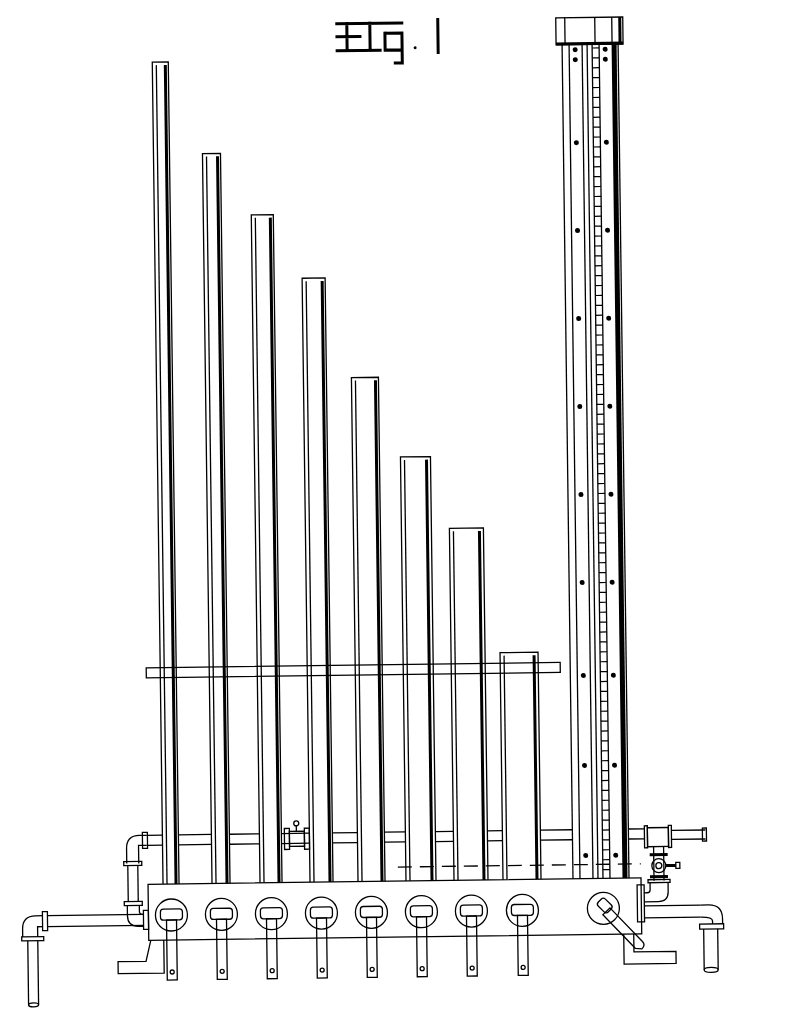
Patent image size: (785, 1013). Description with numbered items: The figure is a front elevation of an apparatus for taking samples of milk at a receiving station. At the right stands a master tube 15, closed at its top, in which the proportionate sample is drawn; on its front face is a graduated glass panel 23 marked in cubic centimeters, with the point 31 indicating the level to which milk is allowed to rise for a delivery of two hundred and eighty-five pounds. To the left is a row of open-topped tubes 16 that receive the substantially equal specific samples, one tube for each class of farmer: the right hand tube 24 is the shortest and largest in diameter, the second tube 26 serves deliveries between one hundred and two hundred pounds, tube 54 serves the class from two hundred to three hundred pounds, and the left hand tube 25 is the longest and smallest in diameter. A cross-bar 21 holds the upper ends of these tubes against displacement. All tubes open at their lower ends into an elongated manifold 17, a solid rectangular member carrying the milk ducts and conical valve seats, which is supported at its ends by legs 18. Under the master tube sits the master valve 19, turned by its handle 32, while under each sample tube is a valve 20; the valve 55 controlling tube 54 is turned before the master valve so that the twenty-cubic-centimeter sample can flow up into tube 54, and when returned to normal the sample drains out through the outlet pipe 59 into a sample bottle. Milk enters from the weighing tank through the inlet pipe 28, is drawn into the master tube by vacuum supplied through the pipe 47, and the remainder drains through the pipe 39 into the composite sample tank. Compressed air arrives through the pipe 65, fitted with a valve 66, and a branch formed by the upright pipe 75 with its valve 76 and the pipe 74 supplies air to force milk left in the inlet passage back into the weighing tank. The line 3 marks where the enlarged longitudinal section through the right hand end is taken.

The section line 3 is at (401, 874).
The master tube 15 is at (593, 448).
The sample tubes 16 is at (221, 150).
The manifold 17 is at (558, 919).
The legs 18 is at (139, 965).
The master valve 19 is at (602, 926).
The sample tube valves 20 is at (268, 912).
The cross-bar 21 is at (193, 665).
The graduated glass panel 23 is at (605, 294).
The right hand tube 24 is at (524, 751).
The left hand tube 25 is at (162, 297).
The second tube 26 is at (488, 578).
The inlet pipe 28 is at (711, 964).
The graduation point 31 is at (622, 576).
The handle 32 is at (631, 946).
The composite sample pipe 39 is at (72, 918).
The vacuum pipe 47 is at (720, 909).
The sample tube 54 is at (426, 457).
The valve 55 is at (413, 918).
The outlet pipe 59 is at (433, 953).
The compressed air pipe 65 is at (155, 835).
The valve 66 is at (299, 820).
The pipe 74 is at (670, 899).
The upright pipe 75 is at (676, 849).
The valve 76 is at (680, 870).